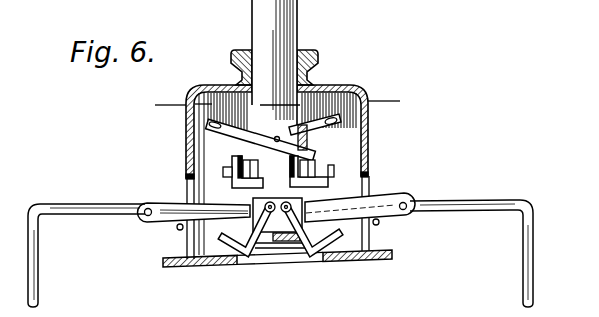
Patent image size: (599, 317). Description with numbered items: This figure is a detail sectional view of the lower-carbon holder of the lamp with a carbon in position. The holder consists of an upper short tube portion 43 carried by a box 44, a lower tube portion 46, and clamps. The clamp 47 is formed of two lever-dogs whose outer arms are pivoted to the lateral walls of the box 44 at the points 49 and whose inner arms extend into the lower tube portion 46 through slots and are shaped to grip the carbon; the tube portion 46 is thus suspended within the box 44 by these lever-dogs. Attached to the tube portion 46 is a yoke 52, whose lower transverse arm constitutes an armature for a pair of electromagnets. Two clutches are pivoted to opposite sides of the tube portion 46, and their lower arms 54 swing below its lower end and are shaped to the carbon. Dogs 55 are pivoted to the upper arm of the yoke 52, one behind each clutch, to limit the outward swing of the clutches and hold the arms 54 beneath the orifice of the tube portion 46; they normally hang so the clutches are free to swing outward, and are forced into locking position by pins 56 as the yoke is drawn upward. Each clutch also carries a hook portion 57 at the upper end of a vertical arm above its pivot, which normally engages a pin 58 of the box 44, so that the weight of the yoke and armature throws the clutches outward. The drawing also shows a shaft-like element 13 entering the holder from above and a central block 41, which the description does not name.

The shaft 13 is at (286, 29).
The upper short tube portion 43 is at (313, 60).
The box 44 is at (355, 86).
The lower tube portion 46 is at (273, 140).
The pivot points 49 is at (207, 124).
The clamp 47 is at (232, 185).
The block 41 is at (279, 223).
The lower arms 54 is at (225, 265).
The hook portion 57 is at (252, 217).
The pin 58 is at (288, 221).
The dogs 55 is at (178, 222).
The pins 56 is at (178, 230).
The yoke 52 is at (468, 201).